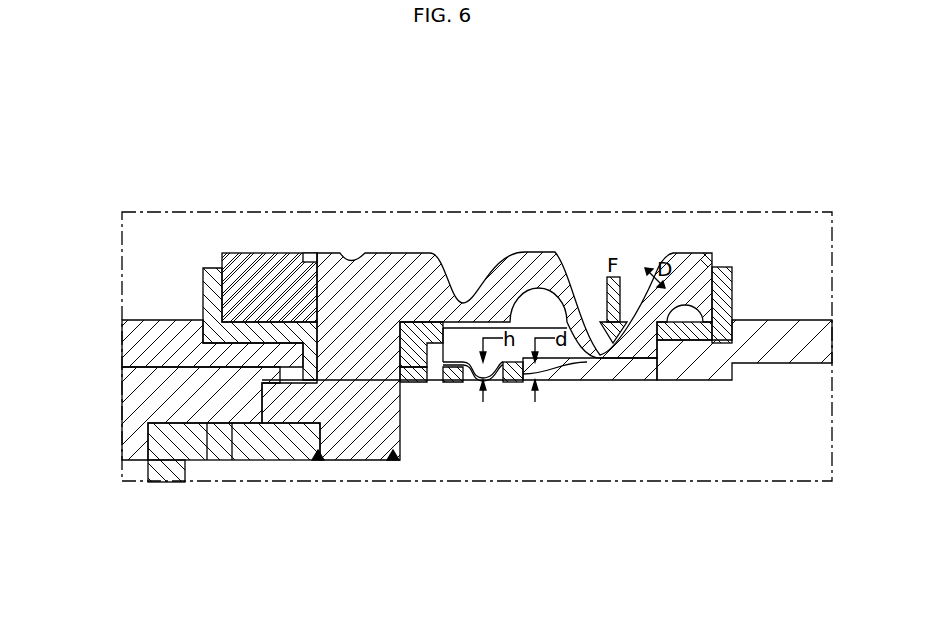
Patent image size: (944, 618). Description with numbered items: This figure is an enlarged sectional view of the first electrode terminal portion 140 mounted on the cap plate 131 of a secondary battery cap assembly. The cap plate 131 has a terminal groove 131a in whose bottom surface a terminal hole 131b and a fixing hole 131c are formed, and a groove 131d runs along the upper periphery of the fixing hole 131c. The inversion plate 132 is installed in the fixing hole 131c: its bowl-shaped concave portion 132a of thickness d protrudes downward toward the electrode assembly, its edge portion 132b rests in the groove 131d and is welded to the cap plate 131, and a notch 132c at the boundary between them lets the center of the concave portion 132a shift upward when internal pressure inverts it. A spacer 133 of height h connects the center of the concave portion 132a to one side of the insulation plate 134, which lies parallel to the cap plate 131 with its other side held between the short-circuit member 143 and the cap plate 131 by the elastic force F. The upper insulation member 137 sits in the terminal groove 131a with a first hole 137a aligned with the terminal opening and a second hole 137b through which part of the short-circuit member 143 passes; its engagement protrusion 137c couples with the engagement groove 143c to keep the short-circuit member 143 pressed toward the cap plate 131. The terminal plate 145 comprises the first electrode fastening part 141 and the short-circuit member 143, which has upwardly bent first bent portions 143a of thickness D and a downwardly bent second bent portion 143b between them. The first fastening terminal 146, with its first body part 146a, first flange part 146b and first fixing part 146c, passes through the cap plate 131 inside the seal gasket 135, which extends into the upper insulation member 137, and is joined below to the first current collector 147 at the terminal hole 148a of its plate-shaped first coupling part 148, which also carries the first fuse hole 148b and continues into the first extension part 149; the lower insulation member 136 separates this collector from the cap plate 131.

The first electrode terminal portion 140 is at (120, 187).
The cap plate 131 is at (823, 330).
The terminal groove 131a is at (737, 257).
The terminal hole 131b is at (367, 387).
The fixing hole 131c is at (560, 384).
The groove 131d is at (605, 385).
The inversion plate 132 is at (533, 372).
The concave portion 132a is at (460, 373).
The edge portion 132b is at (618, 365).
The notch 132c is at (395, 380).
The spacer 133 is at (508, 380).
The insulation plate 134 is at (650, 382).
The seal gasket 135 is at (310, 353).
The lower insulation member 136 is at (130, 405).
The upper insulation member 137 is at (210, 302).
The first hole 137a is at (392, 275).
The second hole 137b is at (665, 345).
The engagement protrusion 137c is at (725, 335).
The first electrode fastening part 141 is at (450, 262).
The short-circuit member 143 is at (745, 154).
The first bent portion 143a is at (538, 253).
The second bent portion 143b is at (603, 260).
The engagement groove 143c is at (712, 247).
The terminal plate 145 is at (625, 108).
The first fastening terminal 146 is at (385, 138).
The first body part 146a is at (340, 300).
The first flange part 146b is at (362, 330).
The first fixing part 146c is at (313, 257).
The first current collector 147 is at (132, 471).
The first coupling part 148 is at (257, 447).
The terminal hole 148a is at (282, 400).
The first fuse hole 148b is at (217, 447).
The first extension part 149 is at (165, 467).